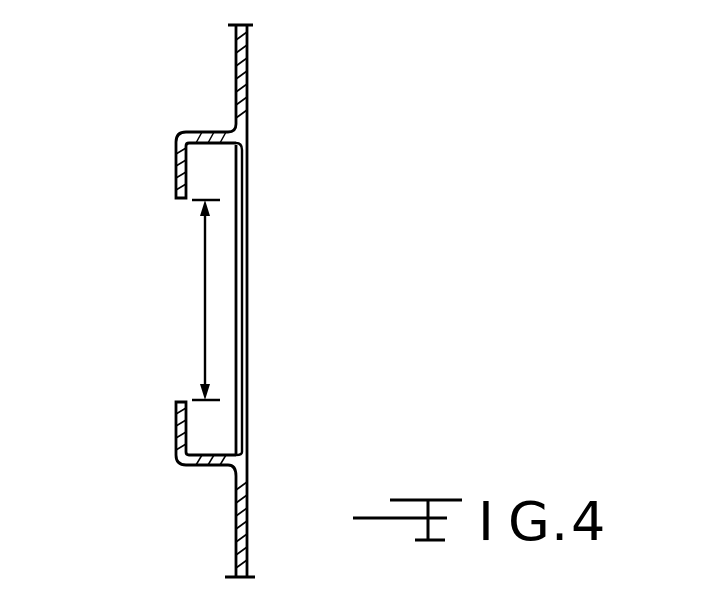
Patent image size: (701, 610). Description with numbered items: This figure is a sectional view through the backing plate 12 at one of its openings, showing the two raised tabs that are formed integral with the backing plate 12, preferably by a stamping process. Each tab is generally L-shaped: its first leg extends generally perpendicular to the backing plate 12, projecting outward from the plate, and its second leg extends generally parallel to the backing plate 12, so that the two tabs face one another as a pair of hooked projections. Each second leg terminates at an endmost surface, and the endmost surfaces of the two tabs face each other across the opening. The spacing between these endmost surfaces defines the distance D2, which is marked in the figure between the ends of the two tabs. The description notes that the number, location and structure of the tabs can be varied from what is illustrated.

The backing plate 12 is at (252, 92).
The distance D2 is at (205, 292).